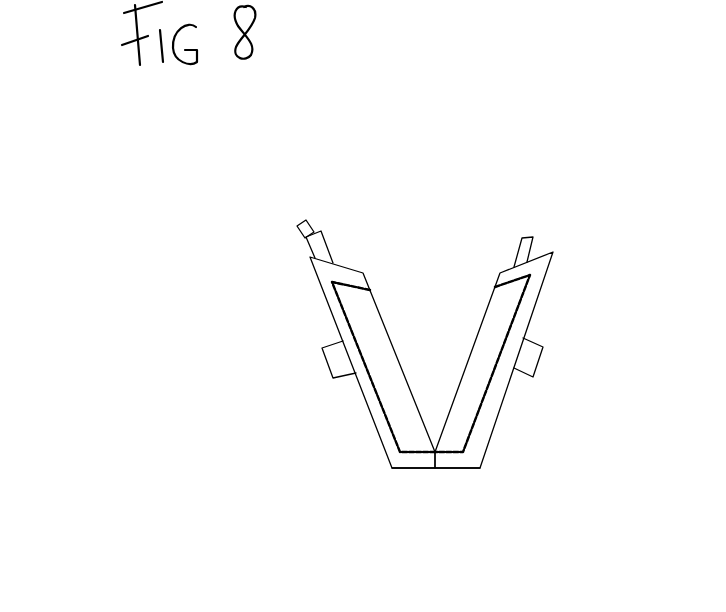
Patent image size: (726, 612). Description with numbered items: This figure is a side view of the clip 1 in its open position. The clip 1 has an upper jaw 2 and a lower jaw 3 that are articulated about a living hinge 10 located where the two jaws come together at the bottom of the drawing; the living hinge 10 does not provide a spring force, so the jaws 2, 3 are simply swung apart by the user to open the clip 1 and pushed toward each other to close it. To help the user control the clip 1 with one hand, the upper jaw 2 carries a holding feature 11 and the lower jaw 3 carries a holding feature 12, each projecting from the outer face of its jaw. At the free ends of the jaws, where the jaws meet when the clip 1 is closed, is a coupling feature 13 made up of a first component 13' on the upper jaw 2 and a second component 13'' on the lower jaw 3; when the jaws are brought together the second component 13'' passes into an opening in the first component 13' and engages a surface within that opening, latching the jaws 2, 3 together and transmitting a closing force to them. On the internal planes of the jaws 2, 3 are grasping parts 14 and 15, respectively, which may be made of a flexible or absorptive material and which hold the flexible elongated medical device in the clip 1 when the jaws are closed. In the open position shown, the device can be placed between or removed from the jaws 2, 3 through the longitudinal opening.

The clip 1 is at (555, 258).
The upper jaw 2 is at (338, 308).
The lower jaw 3 is at (530, 302).
The living hinge 10 is at (435, 468).
The holding feature 11 is at (340, 362).
The holding feature 12 is at (530, 357).
The coupling feature 13 is at (421, 211).
The first component 13' is at (313, 211).
The second component 13'' is at (530, 211).
The grasping part 14 is at (382, 403).
The grasping part 15 is at (483, 403).